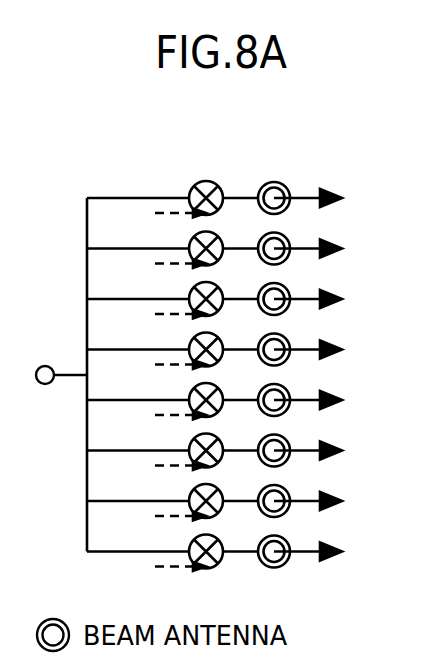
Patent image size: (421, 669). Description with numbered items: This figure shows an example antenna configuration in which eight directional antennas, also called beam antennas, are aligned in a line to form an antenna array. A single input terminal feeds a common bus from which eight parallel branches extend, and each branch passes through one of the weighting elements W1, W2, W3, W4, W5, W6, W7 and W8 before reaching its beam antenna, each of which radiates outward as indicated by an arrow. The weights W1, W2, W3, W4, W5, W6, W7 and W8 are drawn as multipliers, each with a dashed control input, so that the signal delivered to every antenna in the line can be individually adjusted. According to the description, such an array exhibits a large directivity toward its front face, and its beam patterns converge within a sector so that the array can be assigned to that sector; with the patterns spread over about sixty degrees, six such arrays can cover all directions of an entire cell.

The weight multiplier 1 W1 is at (215, 183).
The weight multiplier 2 W2 is at (215, 234).
The weight multiplier 3 W3 is at (215, 284).
The weight multiplier 4 W4 is at (215, 334).
The weight multiplier 5 W5 is at (215, 385).
The weight multiplier 6 W6 is at (215, 436).
The weight multiplier 7 W7 is at (215, 486).
The weight multiplier 8 W8 is at (215, 536).